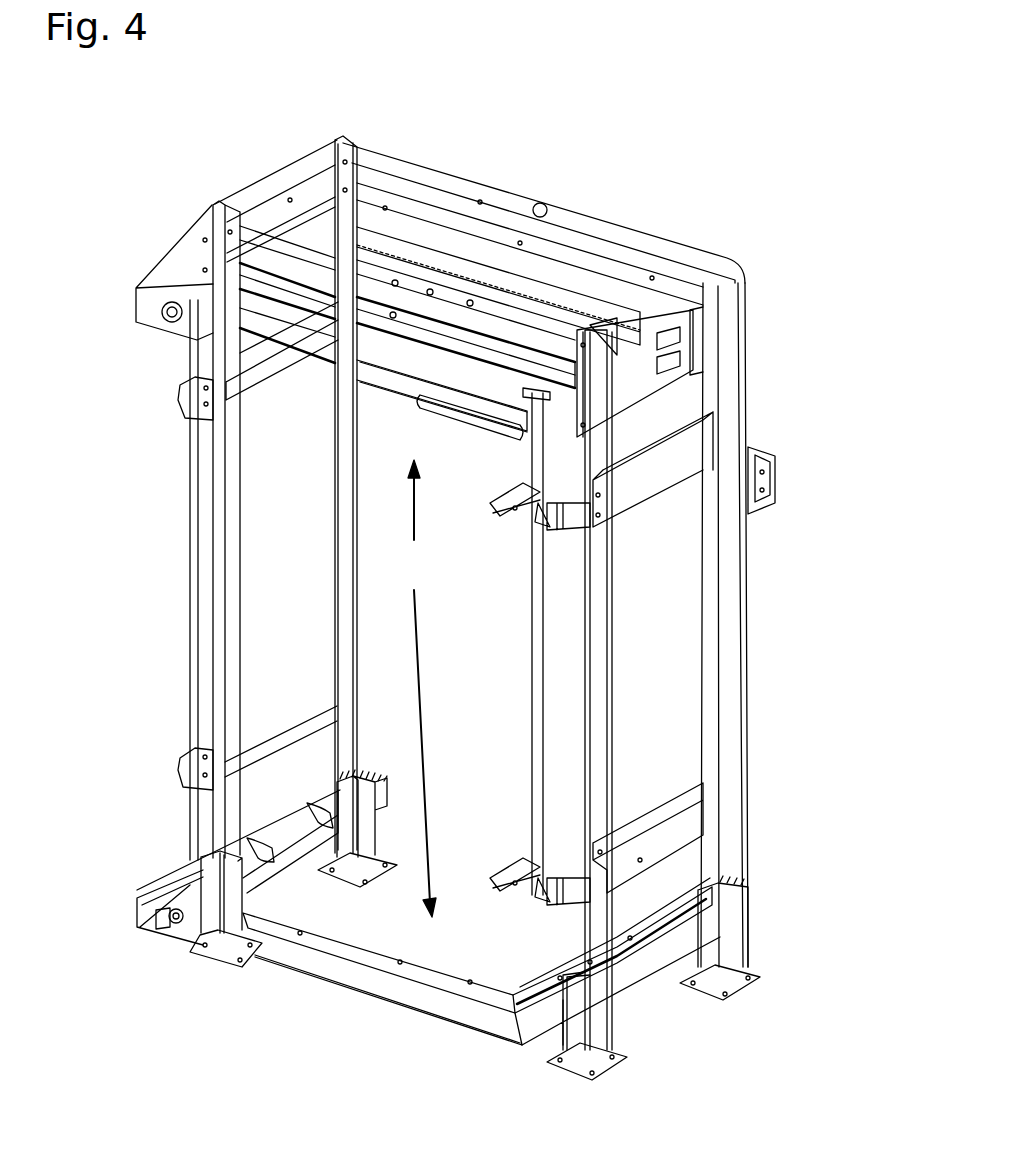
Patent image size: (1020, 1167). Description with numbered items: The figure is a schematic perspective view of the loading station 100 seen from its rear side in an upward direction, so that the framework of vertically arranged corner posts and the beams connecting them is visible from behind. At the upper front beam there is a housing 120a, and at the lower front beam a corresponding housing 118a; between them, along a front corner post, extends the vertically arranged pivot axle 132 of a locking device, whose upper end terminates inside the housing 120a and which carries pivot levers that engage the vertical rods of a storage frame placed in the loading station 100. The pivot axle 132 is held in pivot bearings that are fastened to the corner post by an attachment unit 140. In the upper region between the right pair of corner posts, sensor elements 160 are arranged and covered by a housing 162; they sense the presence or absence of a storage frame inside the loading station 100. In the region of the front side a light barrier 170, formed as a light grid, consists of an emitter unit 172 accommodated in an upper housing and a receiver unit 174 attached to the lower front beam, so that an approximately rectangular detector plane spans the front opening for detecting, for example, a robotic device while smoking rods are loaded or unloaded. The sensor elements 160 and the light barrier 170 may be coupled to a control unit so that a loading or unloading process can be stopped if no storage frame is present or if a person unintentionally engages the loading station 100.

The loading station 100 is at (757, 151).
The housing of lower front beam 118a is at (148, 898).
The housing of upper front beam 120a is at (160, 277).
The pivot axle 132 is at (535, 612).
The attachment unit 140 is at (527, 522).
The sensor elements 160 is at (673, 358).
The housing 162 is at (608, 390).
The light barrier 170 is at (435, 584).
The emitter unit 172 is at (393, 378).
The receiver unit 174 is at (380, 970).